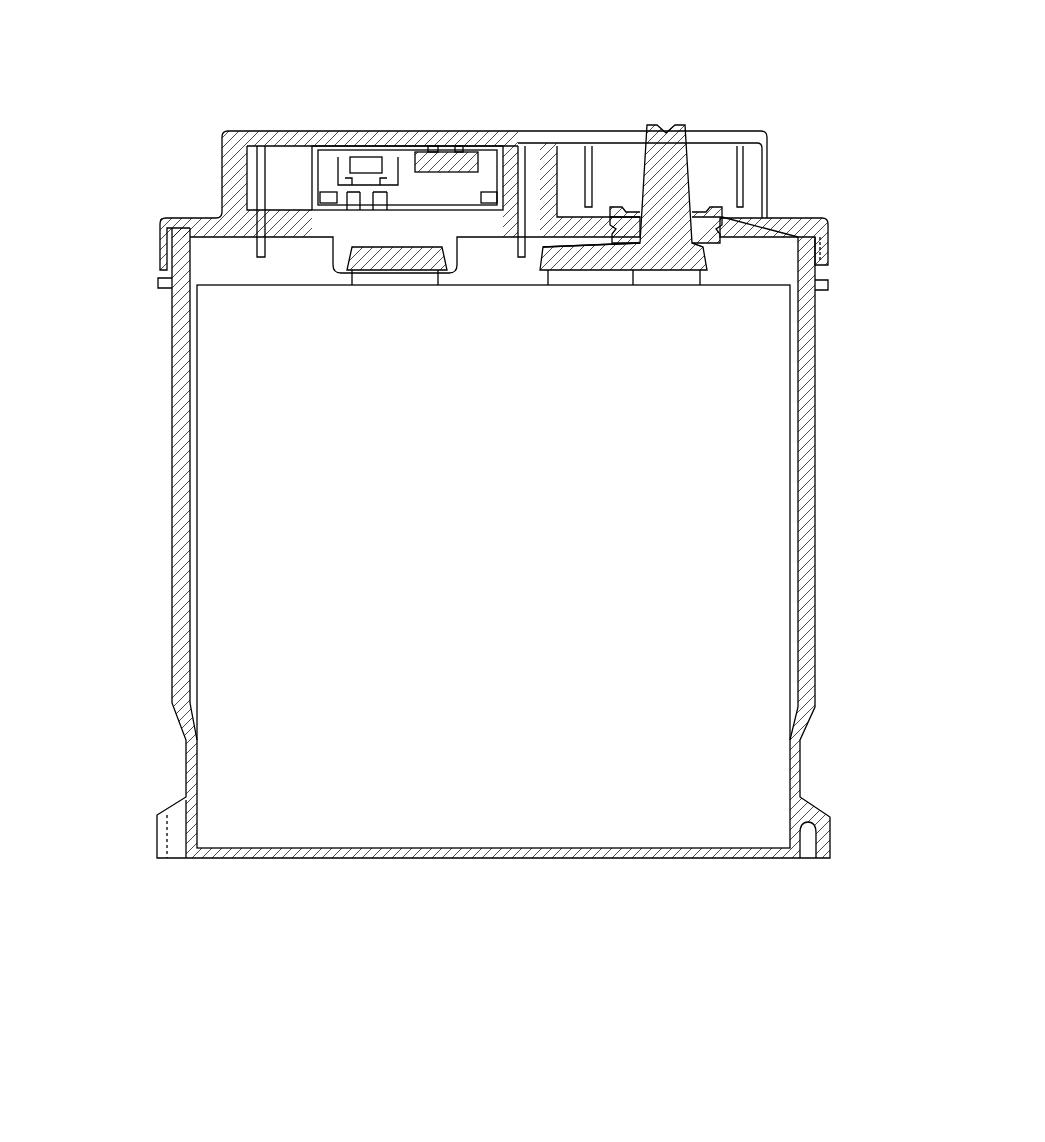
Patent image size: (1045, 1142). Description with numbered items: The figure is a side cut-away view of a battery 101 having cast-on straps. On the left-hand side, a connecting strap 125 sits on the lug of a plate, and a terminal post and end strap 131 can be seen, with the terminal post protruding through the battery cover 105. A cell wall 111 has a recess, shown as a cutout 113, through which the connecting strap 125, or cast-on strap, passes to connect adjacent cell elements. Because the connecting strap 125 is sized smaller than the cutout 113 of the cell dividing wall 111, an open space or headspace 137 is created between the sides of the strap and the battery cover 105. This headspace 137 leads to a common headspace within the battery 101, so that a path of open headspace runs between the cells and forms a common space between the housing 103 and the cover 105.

The battery 101 is at (752, 76).
The housing 103 is at (172, 487).
The battery cover 105 is at (272, 130).
The cell wall 111 is at (770, 250).
The cutout 113 is at (336, 265).
The connecting strap 125 is at (360, 255).
The terminal post and end strap 131 is at (677, 253).
The headspace 137 is at (447, 247).